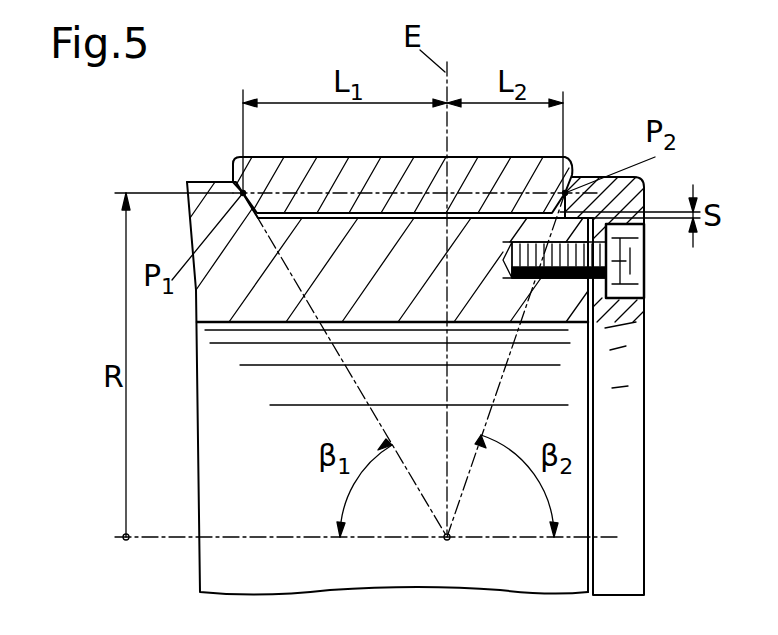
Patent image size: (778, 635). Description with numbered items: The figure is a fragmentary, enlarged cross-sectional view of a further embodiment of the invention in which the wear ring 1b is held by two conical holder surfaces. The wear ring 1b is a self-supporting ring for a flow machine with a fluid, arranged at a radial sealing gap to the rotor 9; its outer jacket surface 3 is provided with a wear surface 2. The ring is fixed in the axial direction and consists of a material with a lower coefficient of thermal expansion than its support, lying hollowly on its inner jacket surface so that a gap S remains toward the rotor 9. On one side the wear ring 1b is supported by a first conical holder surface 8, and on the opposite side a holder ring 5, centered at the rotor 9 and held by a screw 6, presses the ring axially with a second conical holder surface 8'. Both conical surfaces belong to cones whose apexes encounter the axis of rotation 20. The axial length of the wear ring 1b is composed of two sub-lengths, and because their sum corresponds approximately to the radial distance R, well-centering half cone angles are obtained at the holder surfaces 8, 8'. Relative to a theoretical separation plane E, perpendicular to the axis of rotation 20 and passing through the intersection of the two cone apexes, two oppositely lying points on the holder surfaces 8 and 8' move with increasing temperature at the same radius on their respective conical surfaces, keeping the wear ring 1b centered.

The wear ring 1b is at (368, 172).
The wear surface 2 is at (292, 157).
The outer jacket surface 3 is at (492, 157).
The holder ring 5 is at (597, 195).
The screw 6 is at (612, 270).
The first conical holder surface 8 is at (207, 164).
The second conical holder surface 8' is at (598, 150).
The rotor 9 is at (575, 383).
The axis of rotation 20 is at (168, 536).